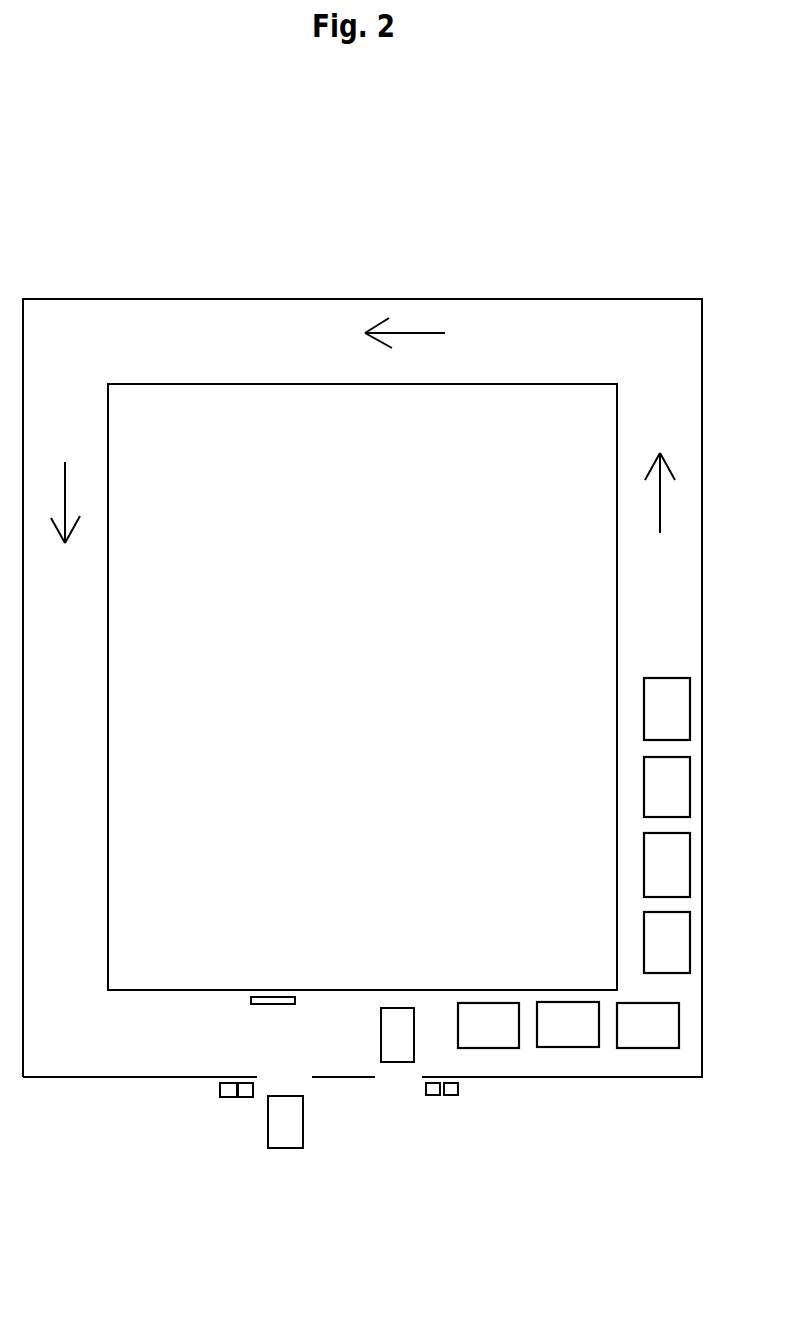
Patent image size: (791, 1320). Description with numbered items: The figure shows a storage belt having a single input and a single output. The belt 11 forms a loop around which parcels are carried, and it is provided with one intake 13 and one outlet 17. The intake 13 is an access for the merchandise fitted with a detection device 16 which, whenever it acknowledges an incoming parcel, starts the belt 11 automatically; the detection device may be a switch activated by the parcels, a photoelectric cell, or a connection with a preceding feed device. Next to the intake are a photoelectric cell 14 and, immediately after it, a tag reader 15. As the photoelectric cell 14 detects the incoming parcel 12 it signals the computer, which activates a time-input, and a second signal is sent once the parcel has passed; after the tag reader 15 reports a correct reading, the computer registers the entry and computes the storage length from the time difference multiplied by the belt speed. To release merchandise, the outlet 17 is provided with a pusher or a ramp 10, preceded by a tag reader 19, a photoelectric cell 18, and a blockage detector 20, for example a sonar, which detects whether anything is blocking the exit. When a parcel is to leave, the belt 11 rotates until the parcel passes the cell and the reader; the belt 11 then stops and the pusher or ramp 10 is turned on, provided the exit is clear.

The pusher or ramp 10 is at (280, 1002).
The belt 11 is at (362, 688).
The parcel 12 is at (488, 1025).
The intake 13 is at (394, 1072).
The photoelectric cell 14 is at (432, 1095).
The tag reader 15 is at (456, 1094).
The detection device 16 is at (392, 1028).
The outlet 17 is at (286, 1059).
The photoelectric cell 18 is at (222, 1097).
The tag reader 19 is at (244, 1097).
The blockage detector 20 is at (287, 1122).